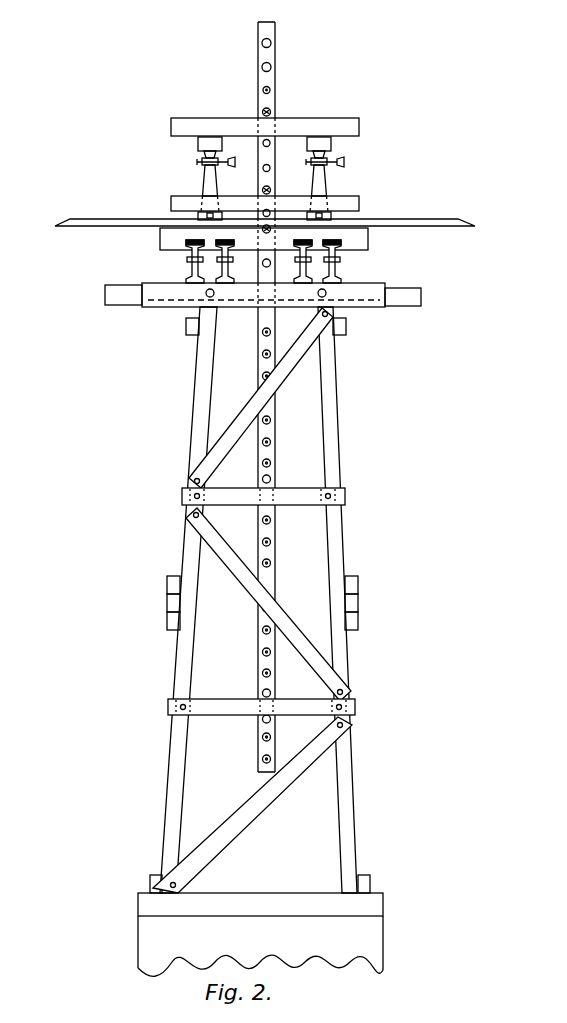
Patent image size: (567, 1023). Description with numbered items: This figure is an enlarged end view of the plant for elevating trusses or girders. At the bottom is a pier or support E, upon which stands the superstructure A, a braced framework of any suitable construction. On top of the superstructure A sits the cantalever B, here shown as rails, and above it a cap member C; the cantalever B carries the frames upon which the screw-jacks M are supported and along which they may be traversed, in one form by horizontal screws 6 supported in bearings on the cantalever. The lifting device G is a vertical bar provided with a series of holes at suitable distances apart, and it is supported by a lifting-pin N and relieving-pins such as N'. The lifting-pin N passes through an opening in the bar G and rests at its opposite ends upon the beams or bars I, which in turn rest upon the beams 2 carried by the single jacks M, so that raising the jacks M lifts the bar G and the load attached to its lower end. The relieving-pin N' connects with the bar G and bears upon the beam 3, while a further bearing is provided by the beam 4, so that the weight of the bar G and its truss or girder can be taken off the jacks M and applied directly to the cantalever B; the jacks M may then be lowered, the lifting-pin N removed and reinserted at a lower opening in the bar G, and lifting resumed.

The lifting device G is at (276, 57).
The lifting-pin N is at (279, 168).
The beams or bars I is at (265, 127).
The beams 2 is at (264, 144).
The screw-jacks M is at (205, 182).
The relieving-pin N' is at (281, 191).
The beam 3 is at (265, 203).
The screws 6 is at (197, 219).
The beam 4 is at (264, 239).
The cantalever B is at (186, 267).
The cap beam C is at (263, 295).
The superstructure A is at (196, 366).
The piers E is at (260, 934).